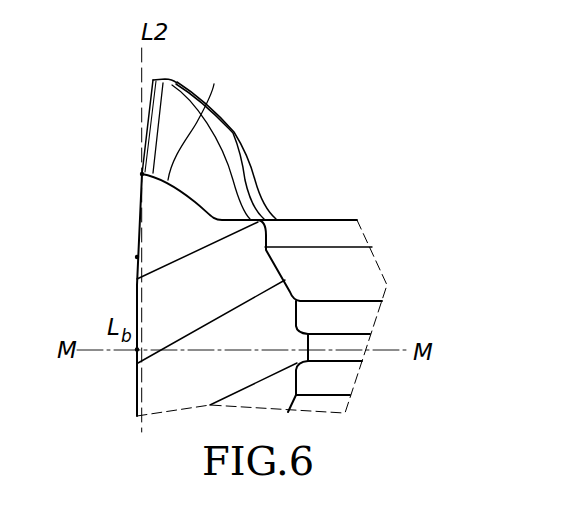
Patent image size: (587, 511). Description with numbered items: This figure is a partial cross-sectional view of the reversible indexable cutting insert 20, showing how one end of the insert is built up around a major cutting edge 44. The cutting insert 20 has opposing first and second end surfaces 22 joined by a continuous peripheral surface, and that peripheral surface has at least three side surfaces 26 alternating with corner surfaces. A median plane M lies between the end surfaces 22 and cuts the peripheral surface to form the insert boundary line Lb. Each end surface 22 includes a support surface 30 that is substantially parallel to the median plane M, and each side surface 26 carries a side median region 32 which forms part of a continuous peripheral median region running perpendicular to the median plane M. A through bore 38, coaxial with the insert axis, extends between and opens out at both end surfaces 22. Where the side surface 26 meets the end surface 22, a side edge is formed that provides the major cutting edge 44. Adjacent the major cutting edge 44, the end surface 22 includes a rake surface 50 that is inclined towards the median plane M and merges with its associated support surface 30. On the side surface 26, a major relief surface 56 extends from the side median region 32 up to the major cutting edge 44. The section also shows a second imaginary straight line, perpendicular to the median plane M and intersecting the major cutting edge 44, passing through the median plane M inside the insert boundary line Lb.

The cutting insert 20 is at (396, 234).
The end surface 22 is at (253, 146).
The side surface 26 is at (130, 256).
The support surface 30 is at (222, 232).
The side median region 32 is at (130, 288).
The through bore 38 is at (327, 256).
The major cutting edge 44 is at (135, 135).
The rake surface 50 is at (181, 191).
The major relief surface 56 is at (140, 214).